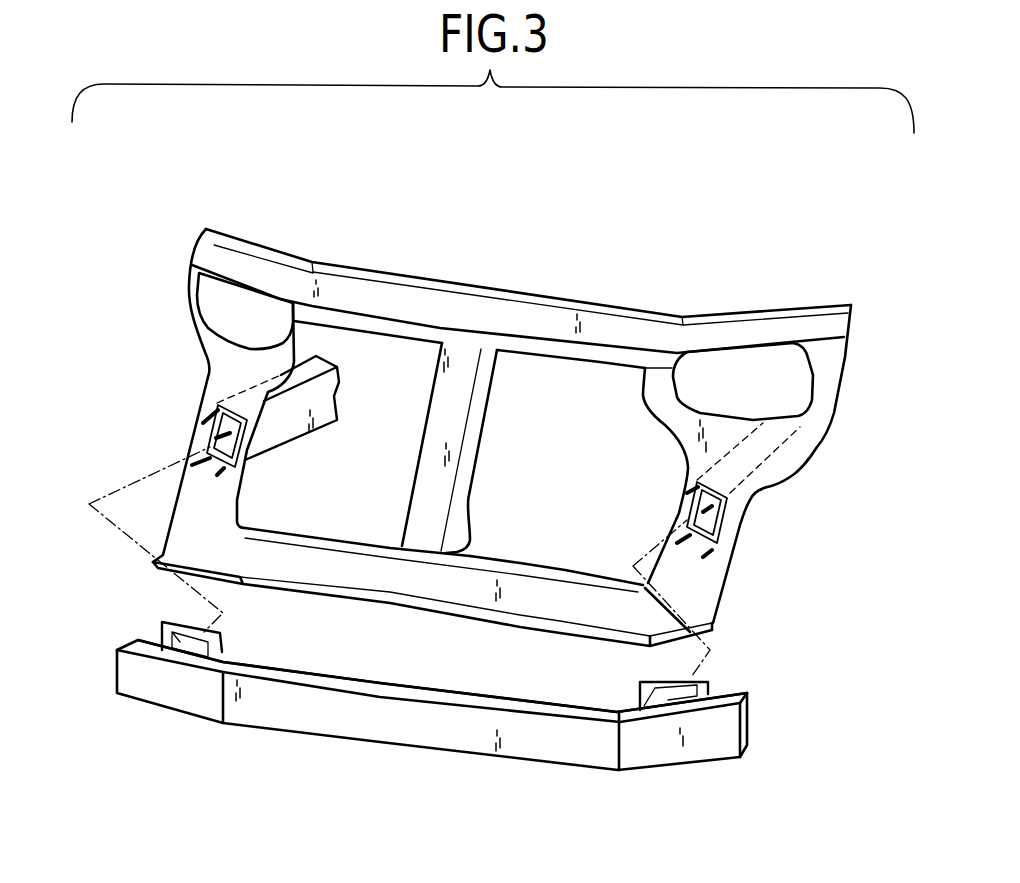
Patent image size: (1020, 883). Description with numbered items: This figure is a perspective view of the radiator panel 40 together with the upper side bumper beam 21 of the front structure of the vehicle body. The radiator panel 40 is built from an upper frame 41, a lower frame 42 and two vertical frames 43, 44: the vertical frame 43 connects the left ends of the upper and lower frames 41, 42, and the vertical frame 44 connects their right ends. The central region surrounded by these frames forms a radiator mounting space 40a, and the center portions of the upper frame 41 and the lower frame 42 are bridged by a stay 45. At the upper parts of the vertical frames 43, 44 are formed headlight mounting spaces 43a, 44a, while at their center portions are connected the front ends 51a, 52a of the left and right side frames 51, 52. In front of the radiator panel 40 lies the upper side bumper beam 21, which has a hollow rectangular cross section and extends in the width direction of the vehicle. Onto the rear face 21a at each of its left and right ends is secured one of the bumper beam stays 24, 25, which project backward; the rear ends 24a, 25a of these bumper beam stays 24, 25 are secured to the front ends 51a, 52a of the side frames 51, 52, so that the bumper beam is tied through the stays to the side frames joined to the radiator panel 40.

The upper side bumper beam 21 is at (400, 727).
The rear face 21a is at (307, 672).
The bumper beam stay 24 is at (690, 688).
The rear end 24a is at (692, 680).
The bumper beam stay 25 is at (160, 643).
The rear end 25a is at (180, 627).
The radiator panel 40 is at (344, 212).
The radiator mounting space 40a is at (586, 402).
The upper frame 41 is at (418, 302).
The lower frame 42 is at (402, 584).
The vertical frame 43 is at (710, 572).
The headlight mounting space 43a is at (795, 385).
The vertical frame 44 is at (237, 380).
The headlight mounting space 44a is at (223, 312).
The stay 45 is at (438, 487).
The side frame 51 is at (763, 492).
The front end 51a is at (720, 523).
The side frame 52 is at (286, 428).
The front end 52a is at (237, 447).